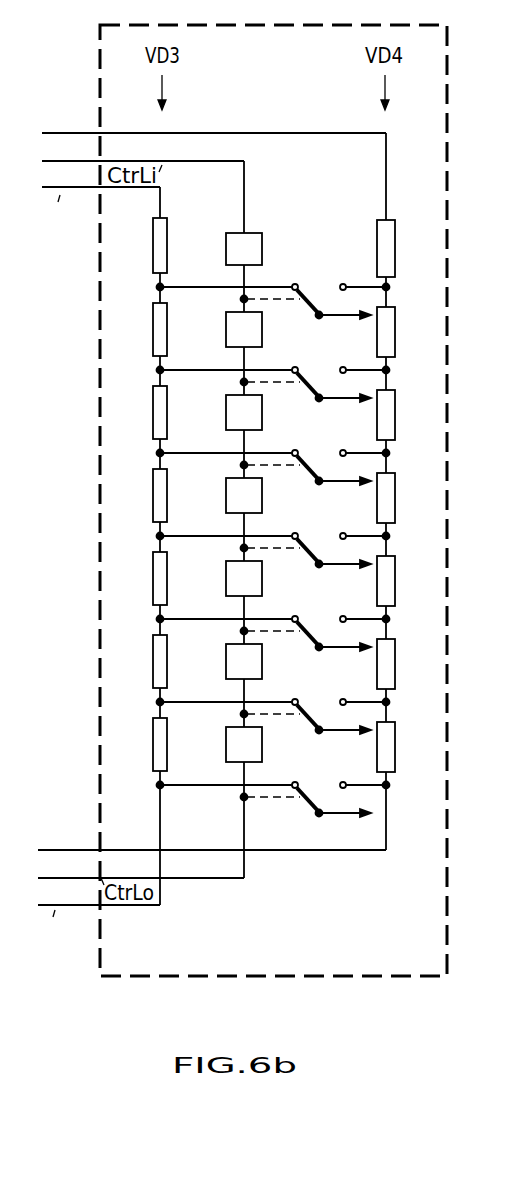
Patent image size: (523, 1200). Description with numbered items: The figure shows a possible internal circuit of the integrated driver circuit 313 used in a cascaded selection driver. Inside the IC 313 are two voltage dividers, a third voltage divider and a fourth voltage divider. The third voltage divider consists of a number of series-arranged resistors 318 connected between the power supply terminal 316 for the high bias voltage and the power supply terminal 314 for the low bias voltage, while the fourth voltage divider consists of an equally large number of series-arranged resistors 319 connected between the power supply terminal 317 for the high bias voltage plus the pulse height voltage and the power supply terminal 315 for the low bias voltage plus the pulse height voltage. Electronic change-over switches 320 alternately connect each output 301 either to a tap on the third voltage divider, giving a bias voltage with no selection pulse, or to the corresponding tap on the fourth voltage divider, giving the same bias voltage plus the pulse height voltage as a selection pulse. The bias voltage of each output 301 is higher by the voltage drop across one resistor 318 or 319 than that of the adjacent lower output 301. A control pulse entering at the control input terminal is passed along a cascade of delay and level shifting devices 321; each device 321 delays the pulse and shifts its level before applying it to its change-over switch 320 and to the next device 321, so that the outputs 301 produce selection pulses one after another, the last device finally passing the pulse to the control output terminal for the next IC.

The output 301 is at (345, 574).
The integrated driver circuit 313 is at (134, 977).
The power supply terminal for the low bias voltage 314 is at (100, 906).
The power supply terminal for the low bias voltage plus the pulse height voltage 315 is at (100, 850).
The power supply terminal for the high bias voltage 316 is at (102, 190).
The power supply terminal for the high bias voltage plus the pulse height voltage 317 is at (101, 132).
The resistor 318 is at (153, 253).
The resistor 319 is at (397, 243).
The electronic change-over switch 320 is at (316, 285).
The delay and level shifting device 321 is at (226, 253).